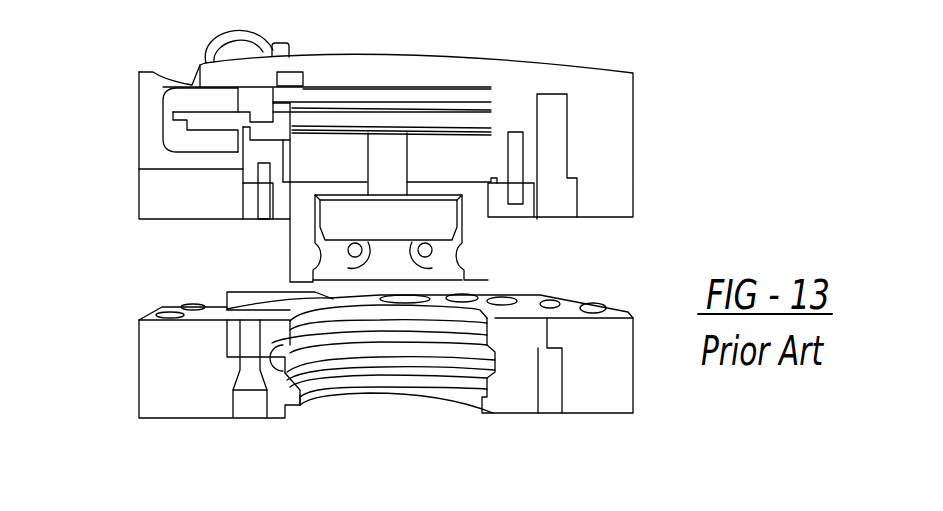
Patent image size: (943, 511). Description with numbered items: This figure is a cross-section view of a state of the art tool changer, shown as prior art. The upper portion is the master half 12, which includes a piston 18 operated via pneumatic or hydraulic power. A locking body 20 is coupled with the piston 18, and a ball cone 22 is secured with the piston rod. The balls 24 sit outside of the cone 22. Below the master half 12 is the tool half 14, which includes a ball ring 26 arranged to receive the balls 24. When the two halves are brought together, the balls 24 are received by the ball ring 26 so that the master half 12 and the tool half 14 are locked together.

The master half 12 is at (663, 116).
The tool half 14 is at (105, 292).
The piston 18 is at (397, 157).
The locking body 20 is at (262, 247).
The ball cone 22 is at (447, 245).
The balls 24 is at (357, 256).
The ball ring 26 is at (283, 368).